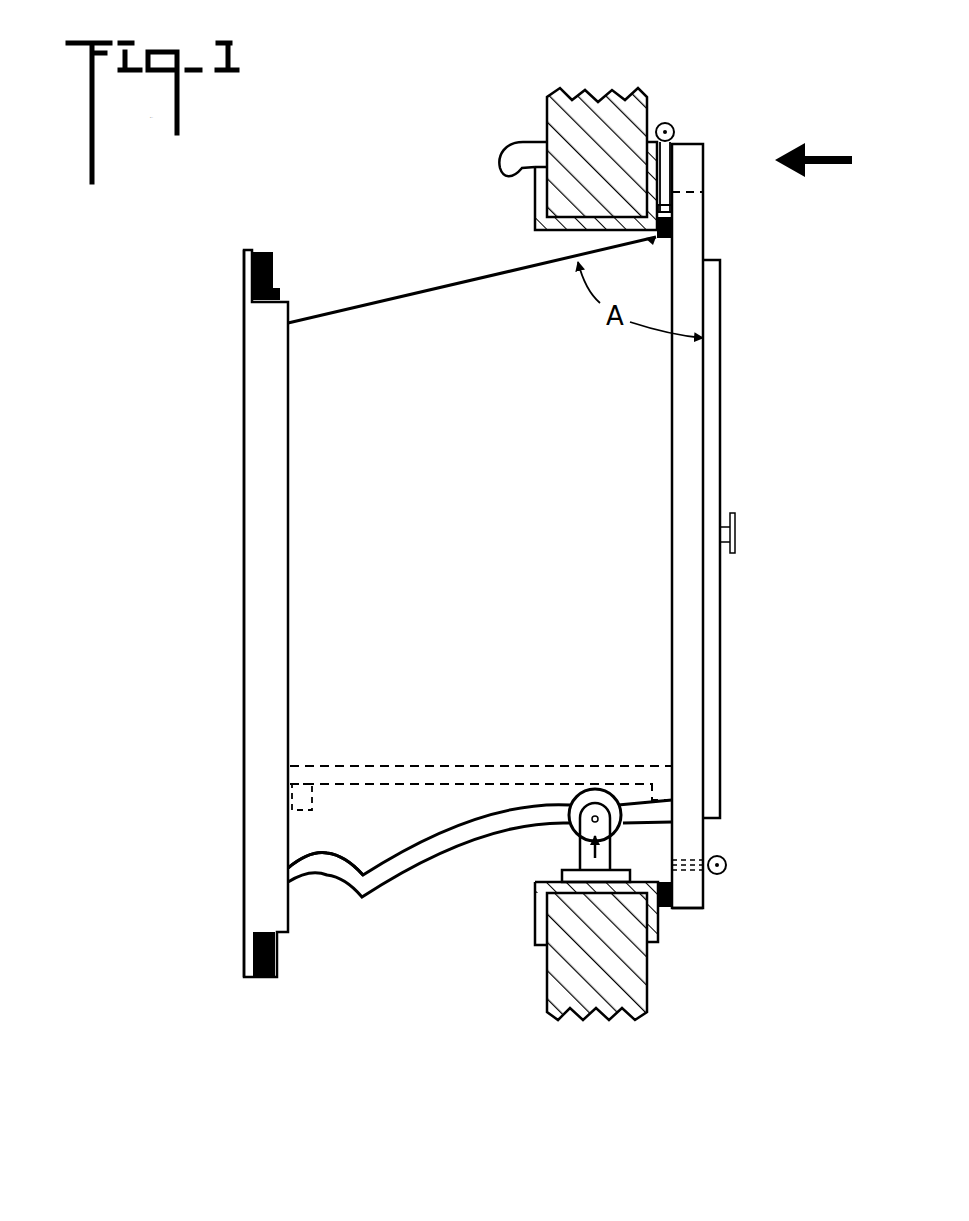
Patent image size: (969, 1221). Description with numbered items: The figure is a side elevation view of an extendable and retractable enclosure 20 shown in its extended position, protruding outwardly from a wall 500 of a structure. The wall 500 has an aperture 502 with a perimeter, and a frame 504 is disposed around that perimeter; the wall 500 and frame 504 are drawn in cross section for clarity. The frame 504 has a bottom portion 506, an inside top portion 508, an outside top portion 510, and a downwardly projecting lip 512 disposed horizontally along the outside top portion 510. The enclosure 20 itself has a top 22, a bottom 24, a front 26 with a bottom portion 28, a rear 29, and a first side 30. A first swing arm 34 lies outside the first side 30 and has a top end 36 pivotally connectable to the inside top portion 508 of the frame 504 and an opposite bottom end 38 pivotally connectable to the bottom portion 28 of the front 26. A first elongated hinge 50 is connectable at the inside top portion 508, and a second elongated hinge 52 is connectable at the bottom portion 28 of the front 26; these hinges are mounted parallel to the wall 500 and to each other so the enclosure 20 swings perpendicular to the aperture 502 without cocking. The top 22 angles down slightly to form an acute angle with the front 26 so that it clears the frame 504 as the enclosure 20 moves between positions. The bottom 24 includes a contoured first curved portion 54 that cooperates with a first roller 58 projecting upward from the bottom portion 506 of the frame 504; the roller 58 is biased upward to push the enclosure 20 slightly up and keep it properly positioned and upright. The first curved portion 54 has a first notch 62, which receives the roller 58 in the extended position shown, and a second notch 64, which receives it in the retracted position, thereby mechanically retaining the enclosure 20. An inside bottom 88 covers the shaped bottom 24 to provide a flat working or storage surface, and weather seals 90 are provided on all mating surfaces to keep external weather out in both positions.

The extendable and retractable enclosure 20 is at (437, 215).
The top 22 is at (387, 302).
The bottom 24 is at (392, 877).
The front 26 is at (712, 477).
The bottom portion of front 28 is at (687, 838).
The rear 29 is at (242, 607).
The first side 30 is at (313, 708).
The first swing arm 34 is at (695, 672).
The top end of first swing arm 36 is at (695, 170).
The bottom end of first swing arm 38 is at (697, 888).
The first elongated hinge 50 is at (675, 132).
The second elongated hinge 52 is at (723, 873).
The first curved portion 54 is at (395, 847).
The first roller 58 is at (580, 805).
The first notch 62 is at (602, 802).
The second notch 64 is at (327, 850).
The inside bottom 88 is at (422, 775).
The weather seals 90 is at (267, 275).
The wall 500 is at (590, 105).
The aperture 502 is at (582, 242).
The frame 504 is at (505, 135).
The bottom portion of frame 506 is at (657, 922).
The inside top portion of frame 508 is at (662, 125).
The outside top portion of frame 510 is at (535, 212).
The downwardly projecting lip 512 is at (500, 173).